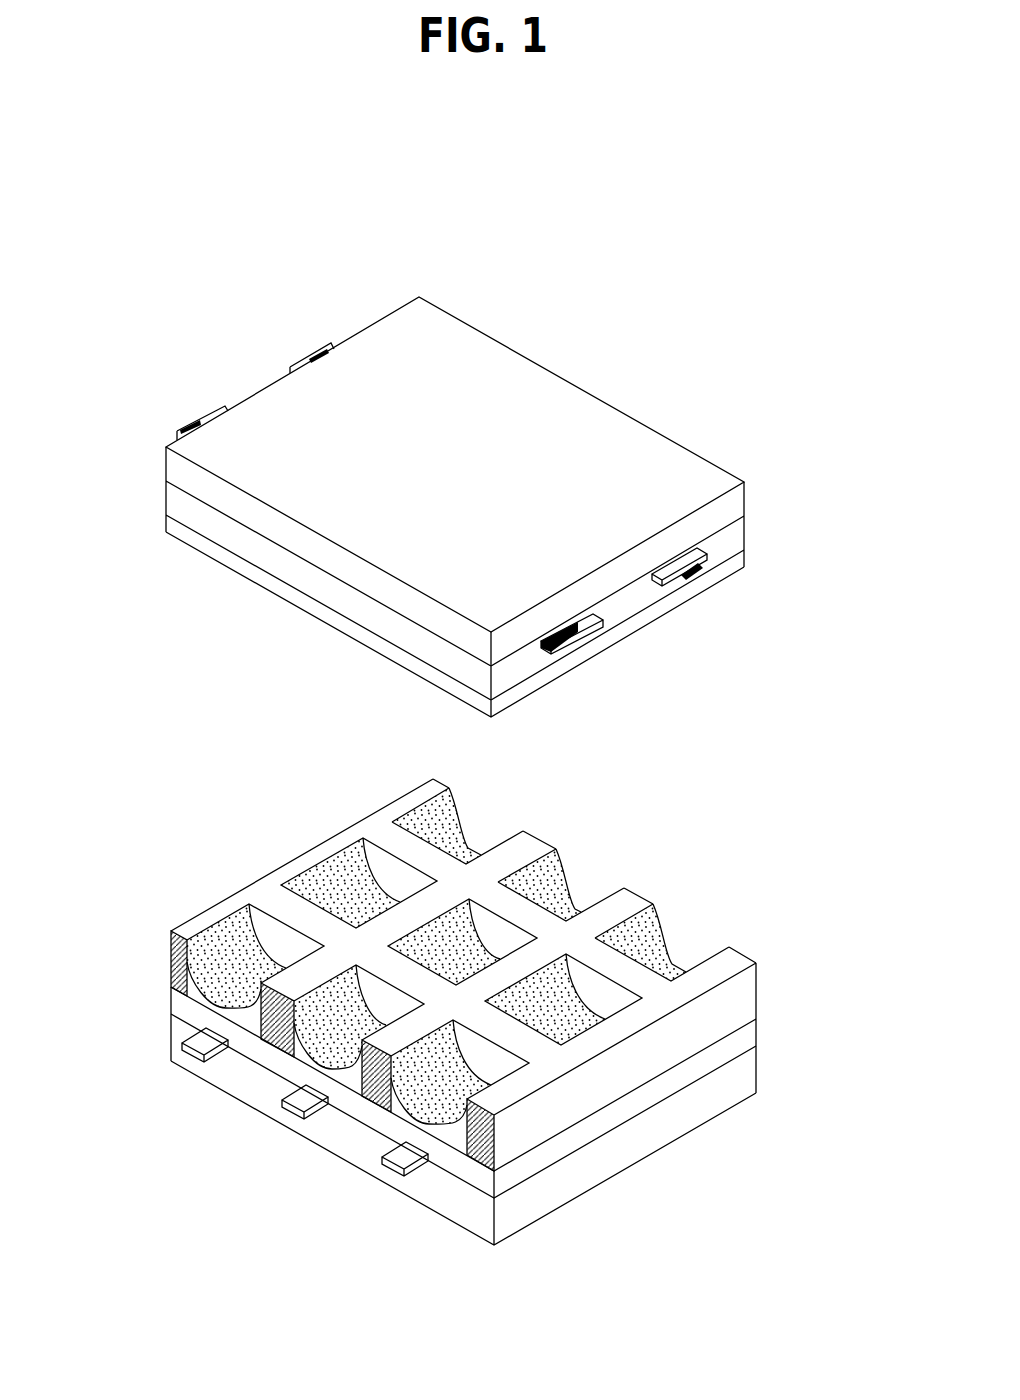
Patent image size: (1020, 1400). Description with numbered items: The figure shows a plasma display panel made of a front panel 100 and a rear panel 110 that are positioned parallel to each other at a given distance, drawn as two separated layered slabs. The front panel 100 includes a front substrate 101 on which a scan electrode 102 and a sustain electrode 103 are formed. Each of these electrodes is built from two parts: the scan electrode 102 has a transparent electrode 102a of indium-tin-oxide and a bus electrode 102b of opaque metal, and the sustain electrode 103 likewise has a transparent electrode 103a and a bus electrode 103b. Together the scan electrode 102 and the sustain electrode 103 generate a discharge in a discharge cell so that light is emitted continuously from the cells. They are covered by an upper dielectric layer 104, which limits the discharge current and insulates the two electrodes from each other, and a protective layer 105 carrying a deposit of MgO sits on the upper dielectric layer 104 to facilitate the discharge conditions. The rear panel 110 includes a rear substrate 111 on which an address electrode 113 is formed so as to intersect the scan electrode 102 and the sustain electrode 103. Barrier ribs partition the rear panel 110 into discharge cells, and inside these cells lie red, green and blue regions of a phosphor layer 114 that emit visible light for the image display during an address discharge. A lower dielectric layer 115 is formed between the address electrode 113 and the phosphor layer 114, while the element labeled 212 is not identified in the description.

The front panel 100 is at (364, 297).
The front substrate 101 is at (597, 413).
The scan electrode 102 is at (672, 655).
The transparent electrode 102a is at (597, 623).
The bus electrode 102b is at (567, 653).
The sustain electrode 103 is at (777, 596).
The transparent electrode 103a is at (700, 560).
The bus electrode 103b is at (672, 581).
The upper dielectric layer 104 is at (168, 499).
The protective layer 105 is at (168, 521).
The rear panel 110 is at (395, 1210).
The rear substrate 111 is at (648, 1130).
The address electrode 113 is at (397, 1178).
The phosphor layer 114 is at (496, 1172).
The lower dielectric layer 115 is at (729, 1040).
The pixel layer 212 is at (643, 1048).